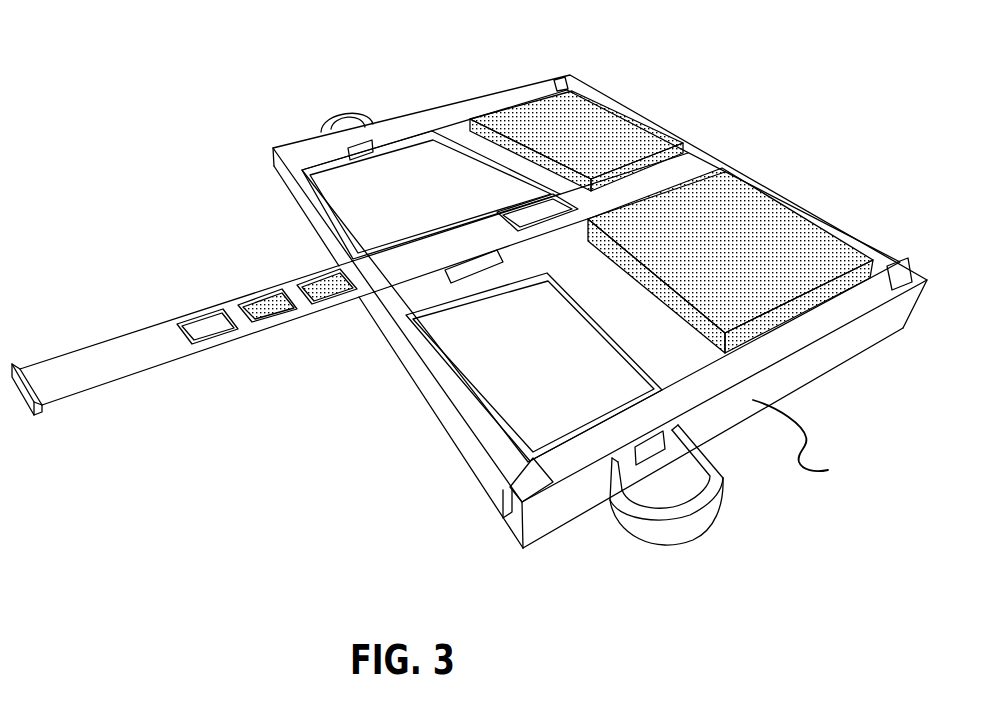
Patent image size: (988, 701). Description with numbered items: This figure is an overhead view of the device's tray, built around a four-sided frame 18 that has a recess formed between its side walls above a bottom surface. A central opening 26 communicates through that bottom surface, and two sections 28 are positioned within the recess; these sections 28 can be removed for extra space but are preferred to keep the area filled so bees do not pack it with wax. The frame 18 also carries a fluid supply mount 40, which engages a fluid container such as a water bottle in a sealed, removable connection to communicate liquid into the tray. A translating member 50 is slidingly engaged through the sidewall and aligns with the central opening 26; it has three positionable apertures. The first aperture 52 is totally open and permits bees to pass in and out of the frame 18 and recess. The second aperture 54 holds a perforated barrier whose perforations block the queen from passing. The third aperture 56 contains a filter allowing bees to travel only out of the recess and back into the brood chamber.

The frame 18 is at (523, 548).
The central opening 26 is at (532, 216).
The sections 28 is at (597, 123).
The fluid supply mount 40 is at (348, 117).
The translating member 50 is at (117, 355).
The first aperture 52 is at (203, 327).
The second aperture 54 is at (257, 304).
The third aperture 56 is at (320, 292).